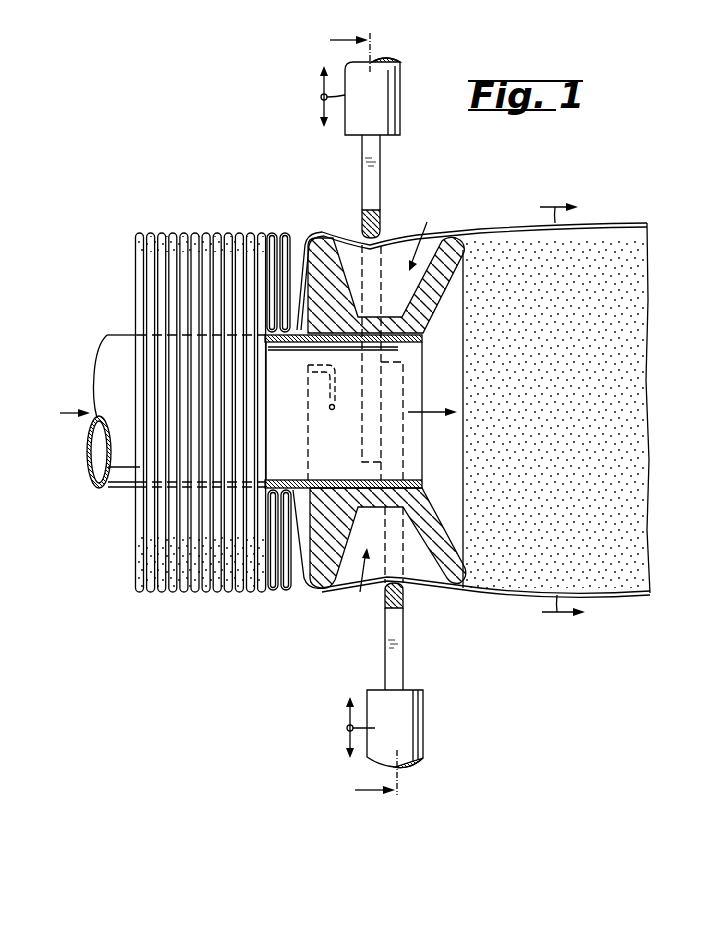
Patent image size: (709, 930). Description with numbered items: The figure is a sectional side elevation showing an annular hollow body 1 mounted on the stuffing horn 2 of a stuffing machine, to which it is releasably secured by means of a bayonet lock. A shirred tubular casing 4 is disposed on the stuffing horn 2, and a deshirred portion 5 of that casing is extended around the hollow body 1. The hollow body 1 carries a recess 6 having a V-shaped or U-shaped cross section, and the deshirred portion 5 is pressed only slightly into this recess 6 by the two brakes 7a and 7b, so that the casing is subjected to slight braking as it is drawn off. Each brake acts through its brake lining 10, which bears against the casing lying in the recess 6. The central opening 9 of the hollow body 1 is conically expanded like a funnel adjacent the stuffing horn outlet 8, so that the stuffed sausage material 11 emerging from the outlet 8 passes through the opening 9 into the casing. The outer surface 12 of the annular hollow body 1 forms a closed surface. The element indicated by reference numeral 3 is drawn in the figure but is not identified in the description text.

The annular hollow body 1 is at (309, 229).
The stuffing horn 2 is at (118, 487).
The sensor element 3 is at (334, 410).
The shirred tubular casing 4 is at (196, 233).
The deshirred portion 5 is at (605, 223).
The recess 6 is at (389, 410).
The brake 7a is at (423, 714).
The brake 7b is at (397, 86).
The stuffing horn outlet 8 is at (422, 348).
The central opening 9 is at (465, 310).
The brake lining 10 is at (383, 230).
The stuffed sausage material 11 is at (637, 256).
The outer surface 12 is at (322, 590).